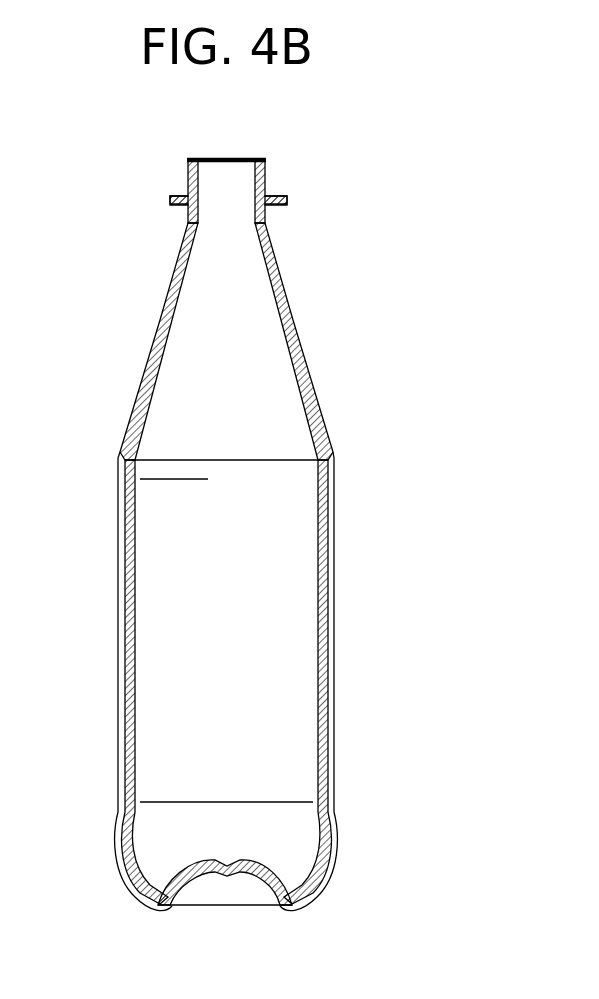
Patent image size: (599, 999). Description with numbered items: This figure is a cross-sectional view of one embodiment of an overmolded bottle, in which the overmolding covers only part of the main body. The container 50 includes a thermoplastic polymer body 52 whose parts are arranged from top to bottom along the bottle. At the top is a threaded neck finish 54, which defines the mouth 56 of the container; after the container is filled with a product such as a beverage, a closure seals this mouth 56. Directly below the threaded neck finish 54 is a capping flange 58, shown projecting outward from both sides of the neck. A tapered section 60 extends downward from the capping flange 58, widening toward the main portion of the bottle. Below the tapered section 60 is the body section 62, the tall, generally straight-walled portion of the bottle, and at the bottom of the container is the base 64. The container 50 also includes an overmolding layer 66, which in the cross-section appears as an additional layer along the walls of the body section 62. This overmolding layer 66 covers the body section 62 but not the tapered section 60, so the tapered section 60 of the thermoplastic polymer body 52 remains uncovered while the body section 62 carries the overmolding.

The container 50 is at (383, 220).
The thermoplastic polymer body 52 is at (133, 398).
The threaded neck finish 54 is at (267, 166).
The mouth 56 is at (197, 158).
The capping flange 58 is at (288, 200).
The tapered section 60 is at (291, 307).
The body section 62 is at (330, 625).
The base 64 is at (250, 912).
The overmolding layer 66 is at (118, 730).